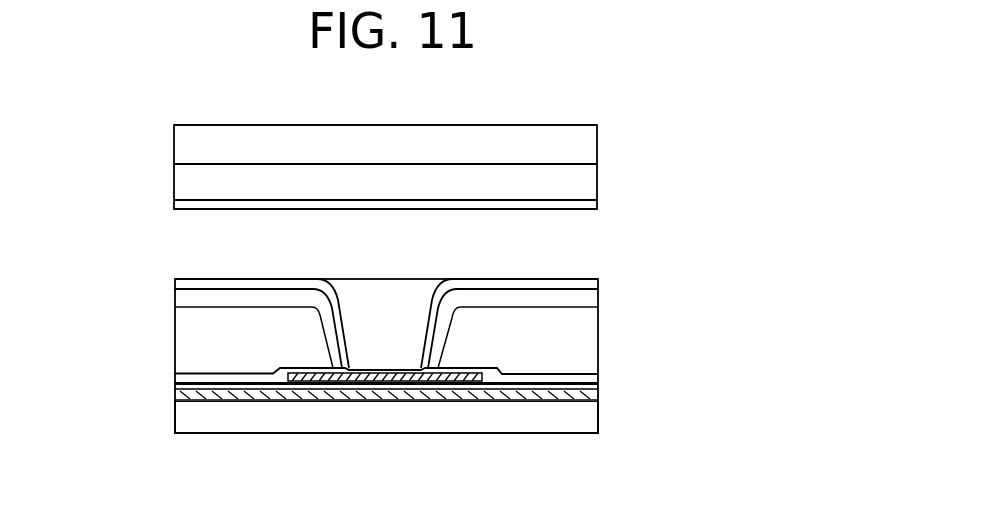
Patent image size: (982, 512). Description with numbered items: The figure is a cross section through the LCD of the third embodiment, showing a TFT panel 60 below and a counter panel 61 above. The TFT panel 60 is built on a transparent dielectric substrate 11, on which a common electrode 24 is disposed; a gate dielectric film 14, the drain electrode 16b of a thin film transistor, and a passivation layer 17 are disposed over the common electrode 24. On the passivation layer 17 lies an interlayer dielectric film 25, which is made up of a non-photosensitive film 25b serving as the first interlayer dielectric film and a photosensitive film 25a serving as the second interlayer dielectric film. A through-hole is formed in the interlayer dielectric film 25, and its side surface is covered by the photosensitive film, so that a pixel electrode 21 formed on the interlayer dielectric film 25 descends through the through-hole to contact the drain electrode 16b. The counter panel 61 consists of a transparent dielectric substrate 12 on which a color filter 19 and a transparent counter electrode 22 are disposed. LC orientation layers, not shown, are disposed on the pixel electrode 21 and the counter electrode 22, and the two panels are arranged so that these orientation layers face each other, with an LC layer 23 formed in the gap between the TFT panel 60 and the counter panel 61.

The transparent dielectric substrate 11 is at (285, 423).
The transparent dielectric substrate 12 is at (588, 146).
The gate dielectric film 14 is at (177, 388).
The drain electrode 16b is at (370, 382).
The passivation layer 17 is at (177, 382).
The color filter 19 is at (588, 182).
The pixel electrode 21 is at (590, 283).
The transparent counter electrode 22 is at (588, 207).
The LC layer 23 is at (190, 232).
The common electrode 24 is at (207, 403).
The interlayer dielectric film 25 is at (712, 295).
The photosensitive film 25a is at (590, 300).
The non-photosensitive film 25b is at (585, 356).
The TFT panel 60 is at (776, 253).
The counter panel 61 is at (700, 125).